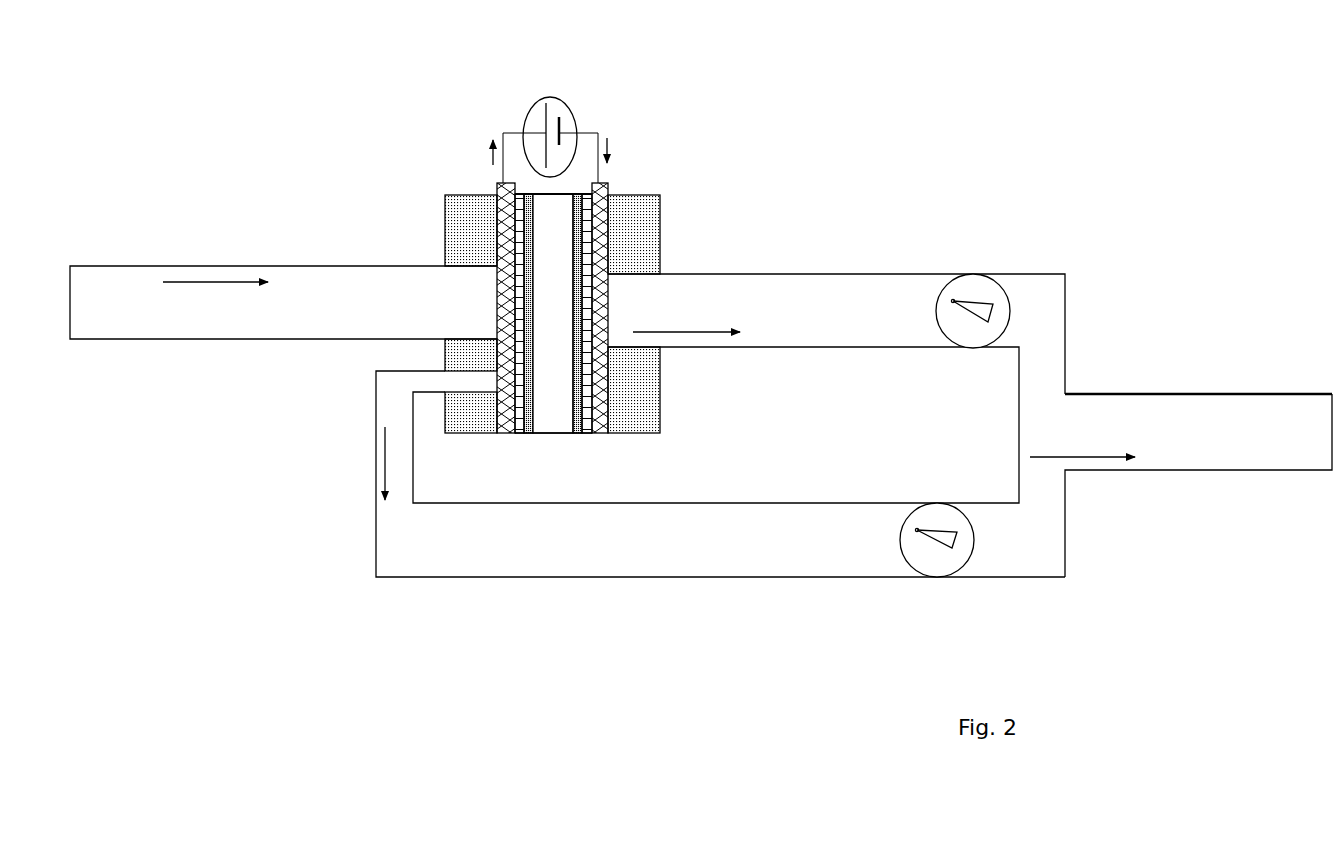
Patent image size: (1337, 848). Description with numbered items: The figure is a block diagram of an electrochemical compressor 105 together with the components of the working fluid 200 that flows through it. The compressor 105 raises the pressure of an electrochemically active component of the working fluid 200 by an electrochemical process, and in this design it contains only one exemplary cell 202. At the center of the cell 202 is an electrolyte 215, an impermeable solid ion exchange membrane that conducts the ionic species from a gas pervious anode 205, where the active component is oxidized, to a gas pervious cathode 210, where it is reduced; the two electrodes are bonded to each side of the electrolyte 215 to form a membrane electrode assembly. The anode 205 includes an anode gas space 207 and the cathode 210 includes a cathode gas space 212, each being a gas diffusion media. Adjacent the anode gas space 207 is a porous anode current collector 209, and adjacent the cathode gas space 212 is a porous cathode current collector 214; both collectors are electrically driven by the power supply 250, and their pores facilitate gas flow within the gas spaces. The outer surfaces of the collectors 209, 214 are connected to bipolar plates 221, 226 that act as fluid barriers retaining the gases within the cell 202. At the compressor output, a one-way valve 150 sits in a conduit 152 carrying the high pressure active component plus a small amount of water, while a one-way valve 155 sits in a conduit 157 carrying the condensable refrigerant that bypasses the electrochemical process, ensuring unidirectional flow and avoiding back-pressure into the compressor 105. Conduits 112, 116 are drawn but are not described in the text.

The electrochemical compressor 105 is at (357, 668).
The low pressure inlet conduit 112 is at (333, 339).
The high pressure outlet conduit 116 is at (1258, 394).
The one-way valve 150 is at (1010, 305).
The conduit 152 is at (893, 274).
The one-way valve 155 is at (902, 535).
The conduit 157 is at (668, 577).
The working fluid 200 is at (282, 336).
The electrochemical cell 202 is at (486, 447).
The anode 205 is at (529, 433).
The anode gas space 207 is at (518, 433).
The anode current collector 209 is at (497, 185).
The cathode 210 is at (577, 433).
The cathode gas space 212 is at (587, 433).
The cathode current collector 214 is at (608, 183).
The electrolyte 215 is at (550, 433).
The bipolar plate 221 is at (456, 195).
The bipolar plate 226 is at (653, 194).
The power supply 250 is at (573, 107).